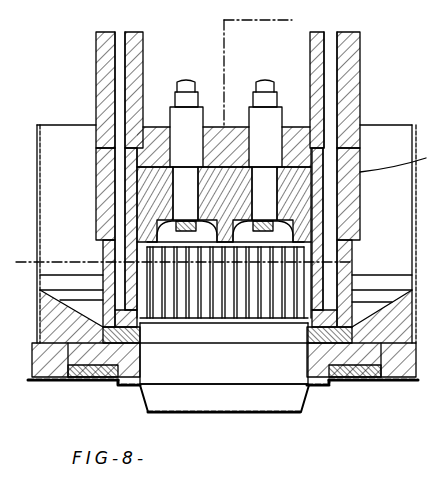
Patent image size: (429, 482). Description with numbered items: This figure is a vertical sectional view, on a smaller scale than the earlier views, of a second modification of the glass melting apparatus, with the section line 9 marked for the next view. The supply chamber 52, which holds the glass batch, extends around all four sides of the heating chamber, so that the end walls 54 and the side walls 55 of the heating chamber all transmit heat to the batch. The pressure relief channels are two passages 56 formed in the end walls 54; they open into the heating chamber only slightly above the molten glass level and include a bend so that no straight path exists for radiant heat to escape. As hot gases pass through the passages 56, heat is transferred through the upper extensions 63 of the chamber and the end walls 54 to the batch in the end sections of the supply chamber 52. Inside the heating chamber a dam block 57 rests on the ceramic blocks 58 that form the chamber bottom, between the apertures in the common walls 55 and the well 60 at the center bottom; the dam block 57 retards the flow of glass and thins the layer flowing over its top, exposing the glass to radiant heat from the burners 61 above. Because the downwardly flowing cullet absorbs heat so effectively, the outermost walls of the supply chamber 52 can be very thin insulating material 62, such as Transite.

The section line 9- 9 is at (289, 2).
The supply chamber 52 is at (410, 104).
The end walls 54 is at (103, 257).
The side walls 55 is at (289, 265).
The passages 56 is at (117, 43).
The dam block 57 is at (246, 328).
The ceramic blocks 58 is at (215, 340).
The well 60 is at (304, 397).
The burners 61 is at (202, 117).
The insulating material 62 is at (78, 106).
The upper extensions 63 is at (96, 176).